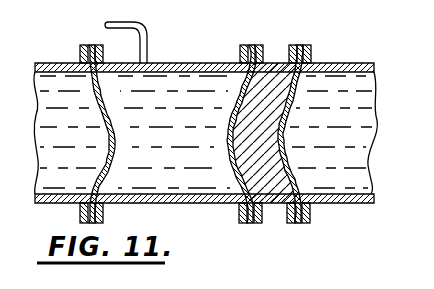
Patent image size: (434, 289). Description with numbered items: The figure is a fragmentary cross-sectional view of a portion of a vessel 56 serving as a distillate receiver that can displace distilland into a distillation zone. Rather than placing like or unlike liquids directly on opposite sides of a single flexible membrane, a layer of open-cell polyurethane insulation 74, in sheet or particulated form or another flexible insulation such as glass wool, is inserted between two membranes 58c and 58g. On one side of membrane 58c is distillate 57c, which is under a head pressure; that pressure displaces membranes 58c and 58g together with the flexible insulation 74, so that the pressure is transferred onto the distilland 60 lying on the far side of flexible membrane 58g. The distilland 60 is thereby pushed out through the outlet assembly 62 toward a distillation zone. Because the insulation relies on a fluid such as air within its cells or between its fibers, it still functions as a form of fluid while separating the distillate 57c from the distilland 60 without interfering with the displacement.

The vessel 56 is at (358, 70).
The distillate 57c is at (347, 162).
The membrane 58c is at (290, 113).
The membrane 58g is at (238, 95).
The distilland 60 is at (153, 165).
The outlet assembly 62 is at (106, 20).
The open-cell polyurethane insulation 74 is at (275, 90).